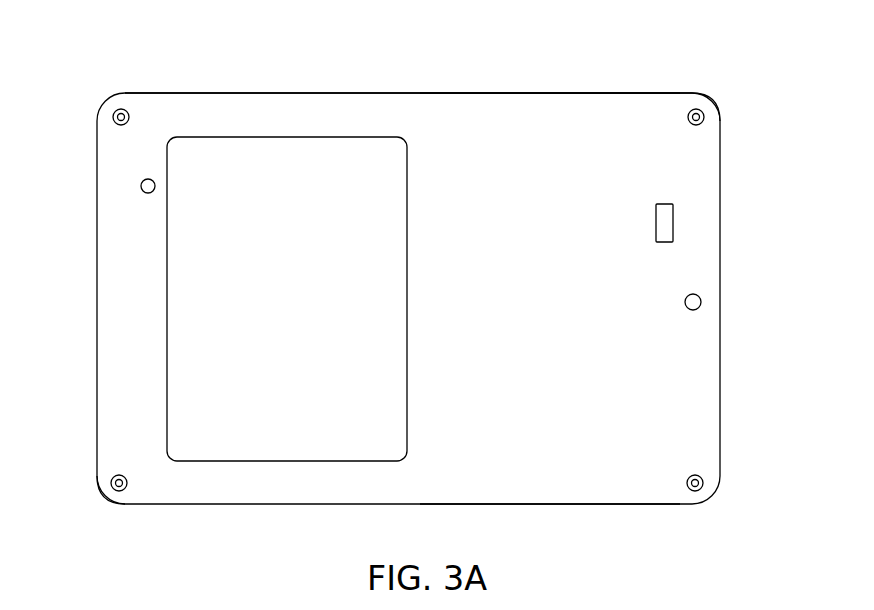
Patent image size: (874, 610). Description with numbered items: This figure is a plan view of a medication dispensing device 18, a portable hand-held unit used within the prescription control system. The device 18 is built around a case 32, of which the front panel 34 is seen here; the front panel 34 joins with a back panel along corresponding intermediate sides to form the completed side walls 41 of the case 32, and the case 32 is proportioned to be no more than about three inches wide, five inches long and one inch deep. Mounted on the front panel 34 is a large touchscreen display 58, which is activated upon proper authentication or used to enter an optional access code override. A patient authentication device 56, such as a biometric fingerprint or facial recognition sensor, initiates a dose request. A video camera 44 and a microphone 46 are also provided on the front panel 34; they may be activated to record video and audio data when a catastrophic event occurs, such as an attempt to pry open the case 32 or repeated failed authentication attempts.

The medication dispensing device 18 is at (362, 63).
The case 32 is at (448, 93).
The front panel 34 is at (527, 118).
The side walls 41 is at (725, 146).
The video camera 44 is at (140, 185).
The microphone 46 is at (701, 300).
The patient authentication device 56 is at (673, 220).
The touchscreen display 58 is at (188, 316).